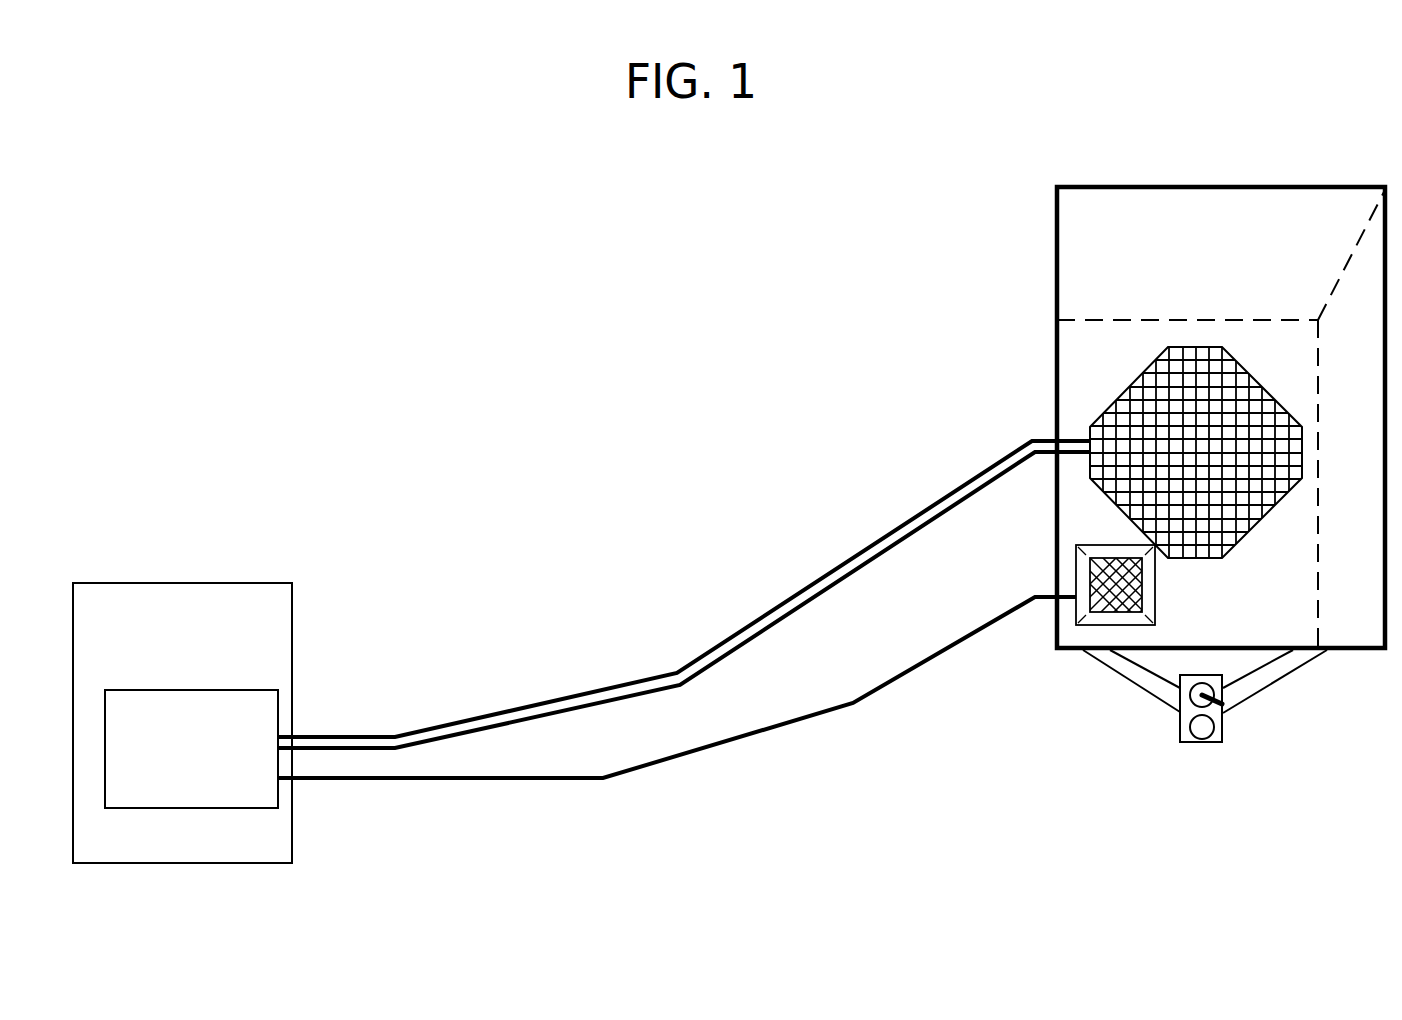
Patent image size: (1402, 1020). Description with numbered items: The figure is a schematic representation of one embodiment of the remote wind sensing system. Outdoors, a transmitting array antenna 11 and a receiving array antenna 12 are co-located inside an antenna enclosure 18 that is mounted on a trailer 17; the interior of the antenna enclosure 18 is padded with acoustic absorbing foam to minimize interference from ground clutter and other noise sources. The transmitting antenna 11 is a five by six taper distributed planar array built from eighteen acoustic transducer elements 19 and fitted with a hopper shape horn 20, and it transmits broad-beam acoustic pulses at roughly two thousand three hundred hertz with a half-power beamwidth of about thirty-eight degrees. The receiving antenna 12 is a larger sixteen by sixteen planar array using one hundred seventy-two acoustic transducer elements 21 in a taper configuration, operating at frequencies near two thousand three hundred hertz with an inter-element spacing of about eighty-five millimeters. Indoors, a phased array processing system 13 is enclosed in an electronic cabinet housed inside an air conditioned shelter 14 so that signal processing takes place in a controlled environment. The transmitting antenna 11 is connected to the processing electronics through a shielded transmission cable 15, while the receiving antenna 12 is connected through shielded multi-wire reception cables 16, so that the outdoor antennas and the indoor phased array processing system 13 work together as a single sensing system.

The transmitting array antenna 11 is at (1143, 585).
The receiving array antenna 12 is at (1197, 420).
The phased array processing system 13 is at (253, 705).
The shelter 14 is at (267, 610).
The shielded transmission cable 15 is at (937, 657).
The shielded multi-wire reception cables 16 is at (922, 508).
The trailer 17 is at (1245, 688).
The antenna enclosure 18 is at (1248, 213).
The acoustic transducer elements 19 is at (1133, 598).
The hopper shape horn 20 is at (1152, 570).
The acoustic transducer elements 21 is at (1194, 358).